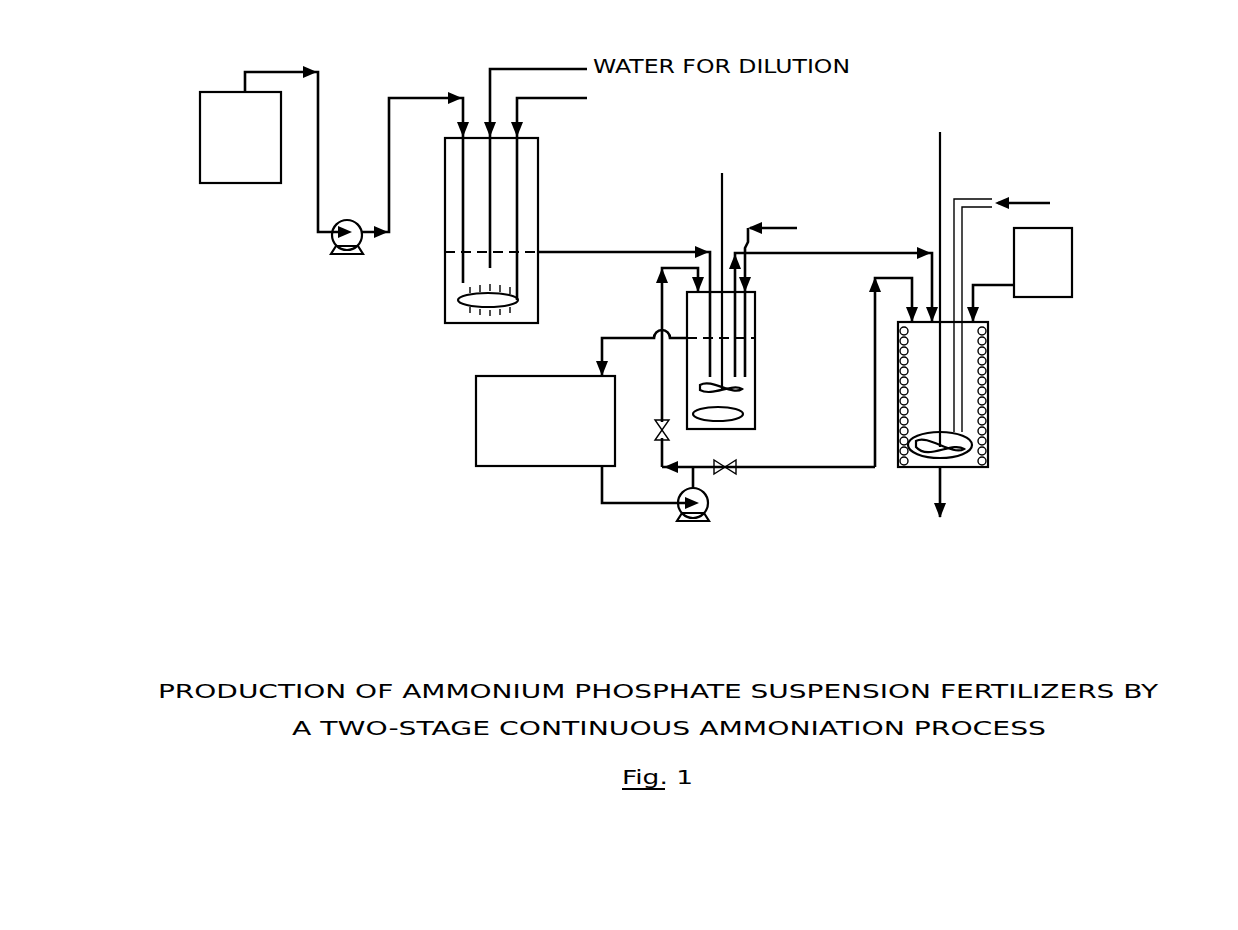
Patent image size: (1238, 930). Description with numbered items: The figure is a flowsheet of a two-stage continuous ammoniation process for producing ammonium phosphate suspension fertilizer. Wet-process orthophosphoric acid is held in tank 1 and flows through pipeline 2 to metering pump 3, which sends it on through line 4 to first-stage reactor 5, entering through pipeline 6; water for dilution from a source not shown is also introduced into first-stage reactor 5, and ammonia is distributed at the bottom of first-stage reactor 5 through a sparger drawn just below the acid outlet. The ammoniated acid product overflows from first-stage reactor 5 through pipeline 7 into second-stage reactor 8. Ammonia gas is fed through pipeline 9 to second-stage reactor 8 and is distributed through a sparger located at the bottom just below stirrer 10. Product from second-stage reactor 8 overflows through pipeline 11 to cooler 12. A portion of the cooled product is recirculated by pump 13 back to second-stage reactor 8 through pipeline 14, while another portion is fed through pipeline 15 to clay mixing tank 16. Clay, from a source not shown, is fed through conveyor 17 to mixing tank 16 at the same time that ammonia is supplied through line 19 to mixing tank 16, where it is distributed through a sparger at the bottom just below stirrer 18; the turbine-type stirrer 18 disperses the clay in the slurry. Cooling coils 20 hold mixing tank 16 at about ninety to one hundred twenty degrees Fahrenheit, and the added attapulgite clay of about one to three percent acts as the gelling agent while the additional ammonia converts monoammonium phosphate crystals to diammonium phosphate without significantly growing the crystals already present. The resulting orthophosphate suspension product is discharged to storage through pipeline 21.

The tank 1 is at (200, 115).
The pipeline 2 is at (262, 71).
The metering pump 3 is at (343, 220).
The line 4 is at (404, 98).
The first-stage reactor 5 is at (445, 177).
The pipeline 6 is at (526, 98).
The pipeline 7 is at (576, 251).
The second-stage reactor 8 is at (756, 300).
The pipeline 9 is at (776, 226).
The stirrer 10 is at (720, 225).
The pipeline 11 is at (605, 337).
The cooler 12 is at (476, 425).
The pump 13 is at (710, 502).
The pipeline 14 is at (665, 447).
The pipeline 15 is at (875, 436).
The clay mixing tank 16 is at (988, 328).
The conveyor 17 is at (985, 283).
The stirrer 18 is at (940, 160).
The line 19 is at (962, 198).
The cooling coils 20 is at (990, 422).
The pipeline 21 is at (945, 495).